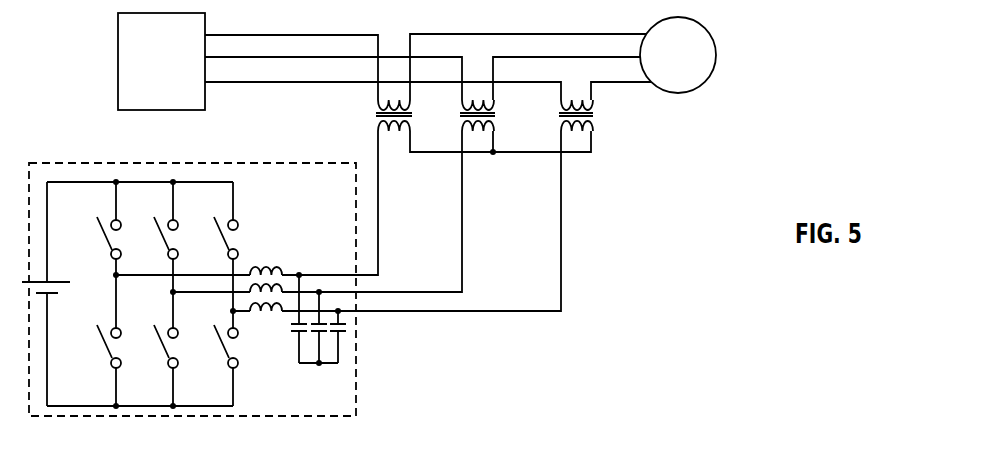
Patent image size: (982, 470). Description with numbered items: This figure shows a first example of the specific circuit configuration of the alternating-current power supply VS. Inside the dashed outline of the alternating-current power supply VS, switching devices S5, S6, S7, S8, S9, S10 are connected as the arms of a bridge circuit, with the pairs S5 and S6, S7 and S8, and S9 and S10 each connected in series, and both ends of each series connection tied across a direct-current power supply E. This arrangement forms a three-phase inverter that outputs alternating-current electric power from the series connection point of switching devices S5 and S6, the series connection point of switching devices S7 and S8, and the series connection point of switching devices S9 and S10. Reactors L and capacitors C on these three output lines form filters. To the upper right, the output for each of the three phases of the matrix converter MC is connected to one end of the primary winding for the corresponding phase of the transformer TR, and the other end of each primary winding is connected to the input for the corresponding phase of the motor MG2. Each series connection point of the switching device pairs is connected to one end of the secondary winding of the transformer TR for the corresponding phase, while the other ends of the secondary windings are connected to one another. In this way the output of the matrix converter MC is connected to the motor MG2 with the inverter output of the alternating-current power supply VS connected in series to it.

The matrix converter MC is at (161, 61).
The motor MG2 is at (678, 55).
The transformer TR is at (503, 122).
The alternating-current power supply VS is at (217, 289).
The direct-current power supply E is at (46, 294).
The reactors L is at (282, 258).
The capacitors C is at (307, 342).
The switching device S5 is at (95, 228).
The switching device S6 is at (94, 340).
The switching device S7 is at (155, 237).
The switching device S8 is at (154, 349).
The switching device S9 is at (242, 246).
The switching device S10 is at (249, 358).